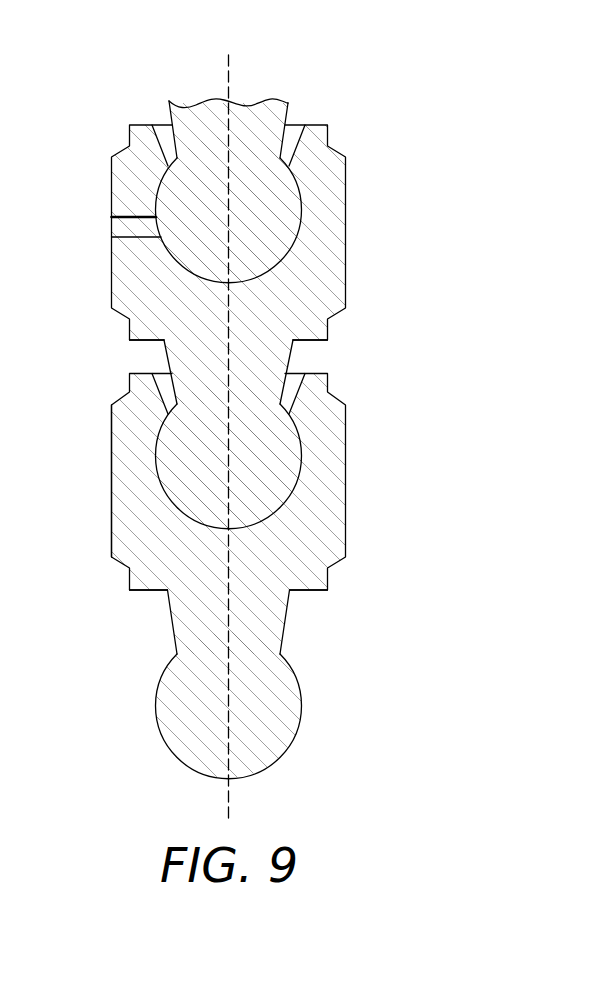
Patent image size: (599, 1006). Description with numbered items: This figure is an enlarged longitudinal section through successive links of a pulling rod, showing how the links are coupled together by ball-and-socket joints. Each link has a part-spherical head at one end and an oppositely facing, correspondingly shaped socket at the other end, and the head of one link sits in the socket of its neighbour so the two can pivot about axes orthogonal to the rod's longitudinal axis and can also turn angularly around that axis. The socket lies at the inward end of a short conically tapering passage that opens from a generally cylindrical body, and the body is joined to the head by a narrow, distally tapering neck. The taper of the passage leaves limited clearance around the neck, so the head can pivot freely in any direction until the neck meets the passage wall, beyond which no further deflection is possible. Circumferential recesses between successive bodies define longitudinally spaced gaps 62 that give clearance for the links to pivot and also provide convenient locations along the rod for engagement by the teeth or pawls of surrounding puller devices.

The gap 62 is at (315, 358).